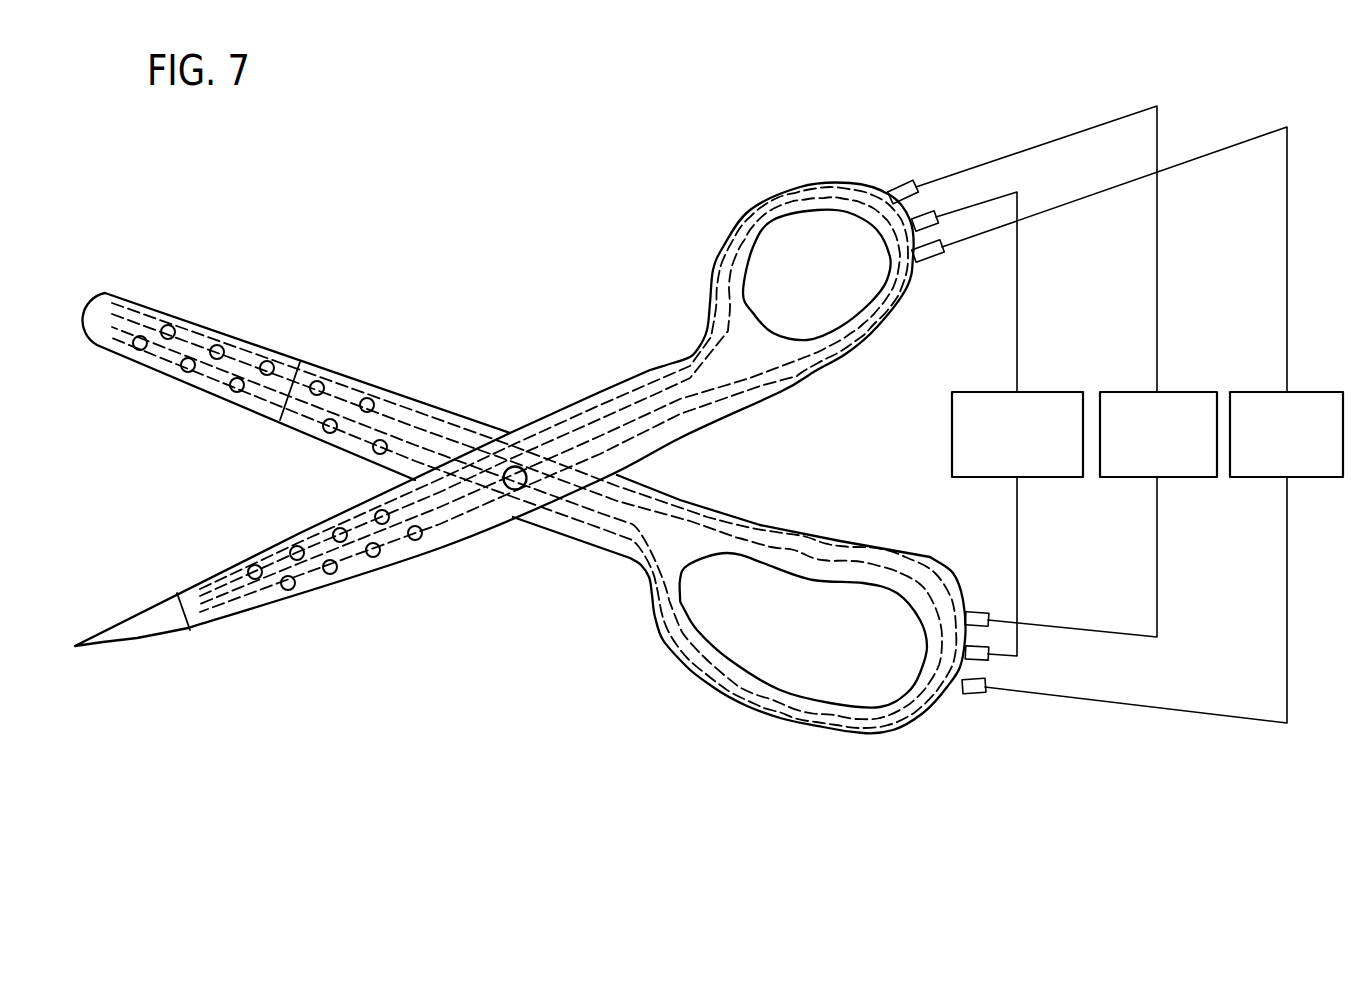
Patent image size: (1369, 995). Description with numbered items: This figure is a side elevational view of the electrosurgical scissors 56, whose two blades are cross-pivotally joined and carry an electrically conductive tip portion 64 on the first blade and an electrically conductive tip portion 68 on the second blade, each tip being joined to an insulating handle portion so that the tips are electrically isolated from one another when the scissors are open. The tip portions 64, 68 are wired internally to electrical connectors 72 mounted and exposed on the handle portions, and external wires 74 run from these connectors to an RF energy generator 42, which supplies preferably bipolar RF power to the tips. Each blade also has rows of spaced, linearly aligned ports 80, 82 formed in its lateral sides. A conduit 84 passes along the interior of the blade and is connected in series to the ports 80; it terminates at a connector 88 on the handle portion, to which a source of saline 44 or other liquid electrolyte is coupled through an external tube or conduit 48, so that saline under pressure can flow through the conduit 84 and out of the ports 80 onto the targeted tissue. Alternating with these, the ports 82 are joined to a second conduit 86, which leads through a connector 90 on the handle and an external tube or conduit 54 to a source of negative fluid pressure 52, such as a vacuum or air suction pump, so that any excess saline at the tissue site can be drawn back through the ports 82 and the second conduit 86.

The electrosurgical scissors 56 is at (416, 214).
The tip portion of second blade 68 is at (103, 312).
The tip portion of first blade 64 is at (143, 633).
The ports 82 is at (368, 403).
The ports 80 is at (328, 427).
The conduit 84 is at (765, 385).
The second conduit 86 is at (658, 376).
The suction connector 90 is at (900, 188).
The electrical connectors 72 is at (920, 218).
The connector 88 is at (928, 258).
The external wires 74 is at (1018, 268).
The external tube or conduit 54 is at (1158, 262).
The external tube or conduit 48 is at (1288, 247).
The RF energy generator 42 is at (983, 391).
The source of negative fluid pressure 52 is at (1125, 391).
The source of saline 44 is at (1263, 391).